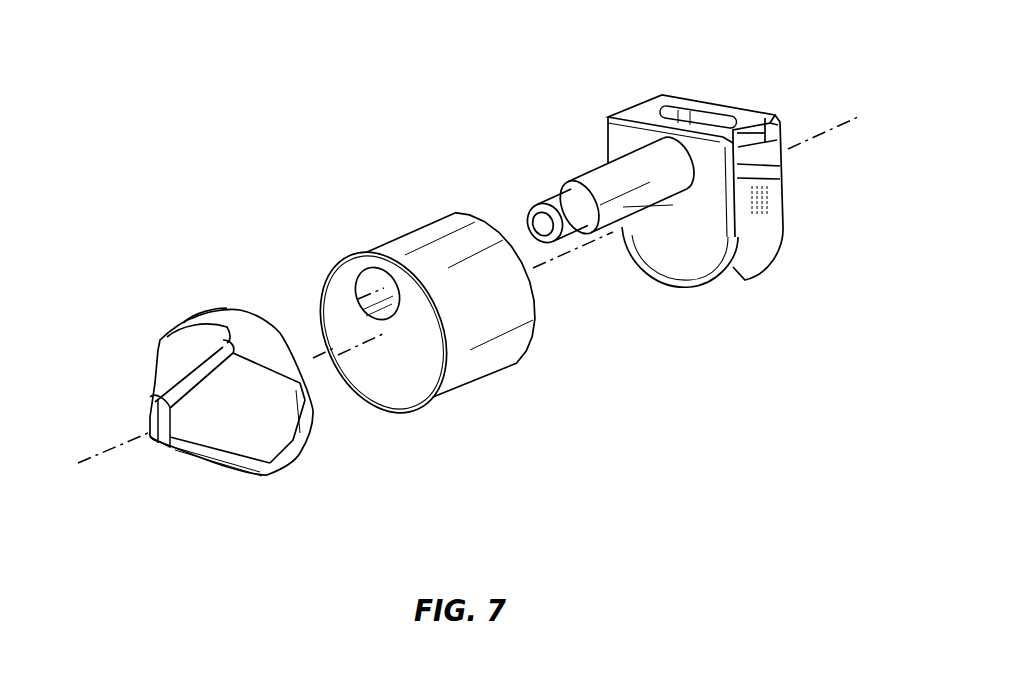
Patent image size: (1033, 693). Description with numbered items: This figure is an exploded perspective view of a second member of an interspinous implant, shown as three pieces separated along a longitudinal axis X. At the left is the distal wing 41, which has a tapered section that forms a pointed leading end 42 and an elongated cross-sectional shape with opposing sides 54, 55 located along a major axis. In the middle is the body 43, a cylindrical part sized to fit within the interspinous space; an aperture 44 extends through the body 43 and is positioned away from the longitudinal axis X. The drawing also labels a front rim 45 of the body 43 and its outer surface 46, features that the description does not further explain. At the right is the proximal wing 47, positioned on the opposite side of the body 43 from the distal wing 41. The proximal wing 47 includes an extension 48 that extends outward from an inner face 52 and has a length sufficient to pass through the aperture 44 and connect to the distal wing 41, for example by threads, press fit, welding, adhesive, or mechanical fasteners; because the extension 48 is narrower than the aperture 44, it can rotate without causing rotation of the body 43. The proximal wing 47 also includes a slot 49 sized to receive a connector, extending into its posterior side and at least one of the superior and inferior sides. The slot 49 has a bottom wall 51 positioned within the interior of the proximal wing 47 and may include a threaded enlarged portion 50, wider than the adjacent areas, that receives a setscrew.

The distal wing 41 is at (177, 365).
The pointed leading end 42 is at (150, 428).
The body 43 is at (423, 320).
The aperture 44 is at (372, 288).
The front rim 45 is at (345, 392).
The sleeve outer surface 46 is at (495, 335).
The proximal wing 47 is at (712, 186).
The extension 48 is at (603, 178).
The slot 49 is at (735, 115).
The threaded enlarged portion 50 is at (760, 171).
The bottom wall 51 is at (673, 113).
The inner face 52 is at (693, 258).
The opposing side 54 is at (282, 472).
The opposing side 55 is at (210, 315).
The longitudinal axis X is at (568, 252).